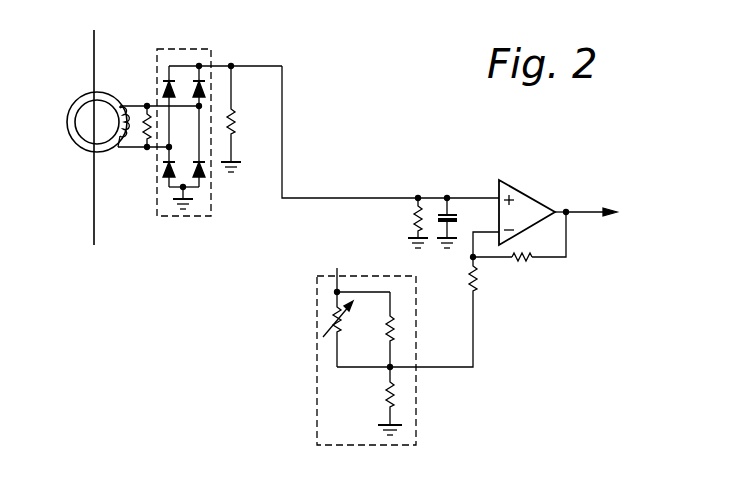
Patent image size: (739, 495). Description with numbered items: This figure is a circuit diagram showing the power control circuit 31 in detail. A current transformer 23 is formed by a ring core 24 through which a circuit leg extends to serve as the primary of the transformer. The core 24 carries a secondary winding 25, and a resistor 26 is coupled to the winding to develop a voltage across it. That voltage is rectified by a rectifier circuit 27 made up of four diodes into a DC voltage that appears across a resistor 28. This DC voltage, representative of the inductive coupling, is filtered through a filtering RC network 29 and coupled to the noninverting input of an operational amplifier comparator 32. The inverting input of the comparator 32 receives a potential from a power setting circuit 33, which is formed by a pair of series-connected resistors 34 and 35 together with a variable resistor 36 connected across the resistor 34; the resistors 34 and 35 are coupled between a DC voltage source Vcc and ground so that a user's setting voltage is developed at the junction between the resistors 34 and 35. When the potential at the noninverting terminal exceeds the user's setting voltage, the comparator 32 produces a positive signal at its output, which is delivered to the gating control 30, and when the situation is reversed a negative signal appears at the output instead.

The current transformer 23 is at (83, 204).
The ring core 24 is at (111, 92).
The secondary winding 25 is at (115, 150).
The resistor 26 is at (143, 135).
The rectifier circuit 27 is at (212, 50).
The resistor 28 is at (236, 130).
The filtering RC network 29 is at (483, 195).
The output to gating control 30 is at (631, 224).
The power control circuit 31 is at (378, 124).
The operational amplifier comparator 32 is at (512, 185).
The power setting circuit 33 is at (418, 441).
The resistor 34 is at (395, 332).
The resistor 35 is at (395, 400).
The variable resistor 36 is at (322, 318).